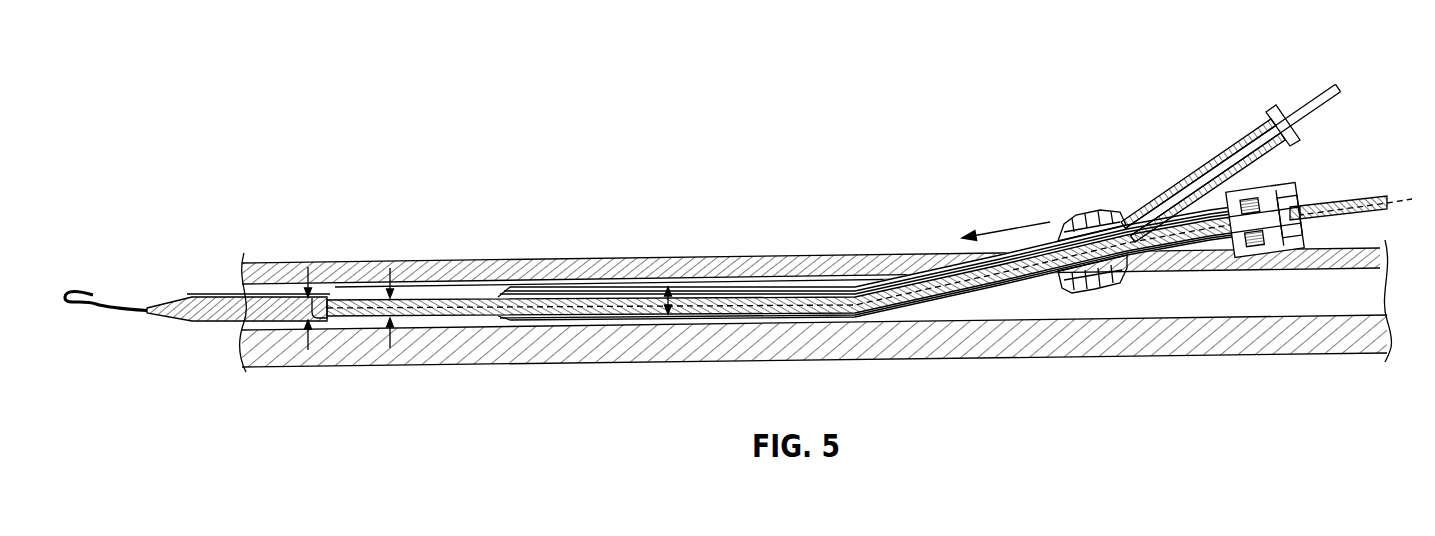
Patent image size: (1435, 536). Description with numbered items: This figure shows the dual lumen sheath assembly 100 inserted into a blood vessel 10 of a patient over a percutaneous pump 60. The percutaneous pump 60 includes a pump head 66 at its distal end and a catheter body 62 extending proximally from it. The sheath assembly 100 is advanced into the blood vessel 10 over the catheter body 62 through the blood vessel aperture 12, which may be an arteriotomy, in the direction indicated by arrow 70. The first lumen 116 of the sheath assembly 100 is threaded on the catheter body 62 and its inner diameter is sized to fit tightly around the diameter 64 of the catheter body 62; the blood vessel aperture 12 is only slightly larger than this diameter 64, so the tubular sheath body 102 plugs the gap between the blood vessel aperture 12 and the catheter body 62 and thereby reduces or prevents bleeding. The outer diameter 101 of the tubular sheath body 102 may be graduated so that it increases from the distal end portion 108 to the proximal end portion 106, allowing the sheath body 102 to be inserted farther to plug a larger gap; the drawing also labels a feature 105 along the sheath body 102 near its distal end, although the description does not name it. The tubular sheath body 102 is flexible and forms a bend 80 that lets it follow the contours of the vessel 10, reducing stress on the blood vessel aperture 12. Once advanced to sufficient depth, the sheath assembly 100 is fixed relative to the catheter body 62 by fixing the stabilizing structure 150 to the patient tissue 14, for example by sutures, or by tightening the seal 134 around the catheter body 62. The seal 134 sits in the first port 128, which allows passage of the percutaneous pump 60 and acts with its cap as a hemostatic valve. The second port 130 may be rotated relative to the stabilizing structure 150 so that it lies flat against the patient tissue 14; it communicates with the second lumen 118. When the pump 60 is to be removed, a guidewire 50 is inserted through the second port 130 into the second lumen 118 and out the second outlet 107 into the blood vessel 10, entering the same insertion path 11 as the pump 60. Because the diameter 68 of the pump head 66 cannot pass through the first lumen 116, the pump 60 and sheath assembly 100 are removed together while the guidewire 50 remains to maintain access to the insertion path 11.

The blood vessel 10 is at (998, 305).
The insertion path 11 is at (950, 260).
The blood vessel aperture 12 is at (990, 257).
The patient tissue 14 is at (283, 270).
The guidewire 50 is at (482, 290).
The percutaneous pump 60 is at (235, 310).
The catheter body 62 is at (443, 300).
The diameter of the catheter body 64 is at (407, 310).
The pump head 66 is at (182, 305).
The diameter of the pump head 68 is at (313, 312).
The arrow 70 is at (997, 258).
The bend 80 is at (857, 311).
The dual lumen sheath assembly 100 is at (1136, 137).
The outer diameter of the tubular sheath body 101 is at (682, 288).
The tubular sheath body 102 is at (713, 282).
The outer sheath 105 is at (510, 295).
The proximal end portion 106 is at (1027, 248).
The second outlet 107 is at (587, 283).
The distal end portion 108 is at (615, 287).
The first lumen 116 is at (750, 298).
The second lumen 118 is at (813, 285).
The first port 128 is at (1258, 185).
The second port 130 is at (1238, 138).
The seal 134 is at (1373, 215).
The stabilizing structure 150 is at (1100, 218).